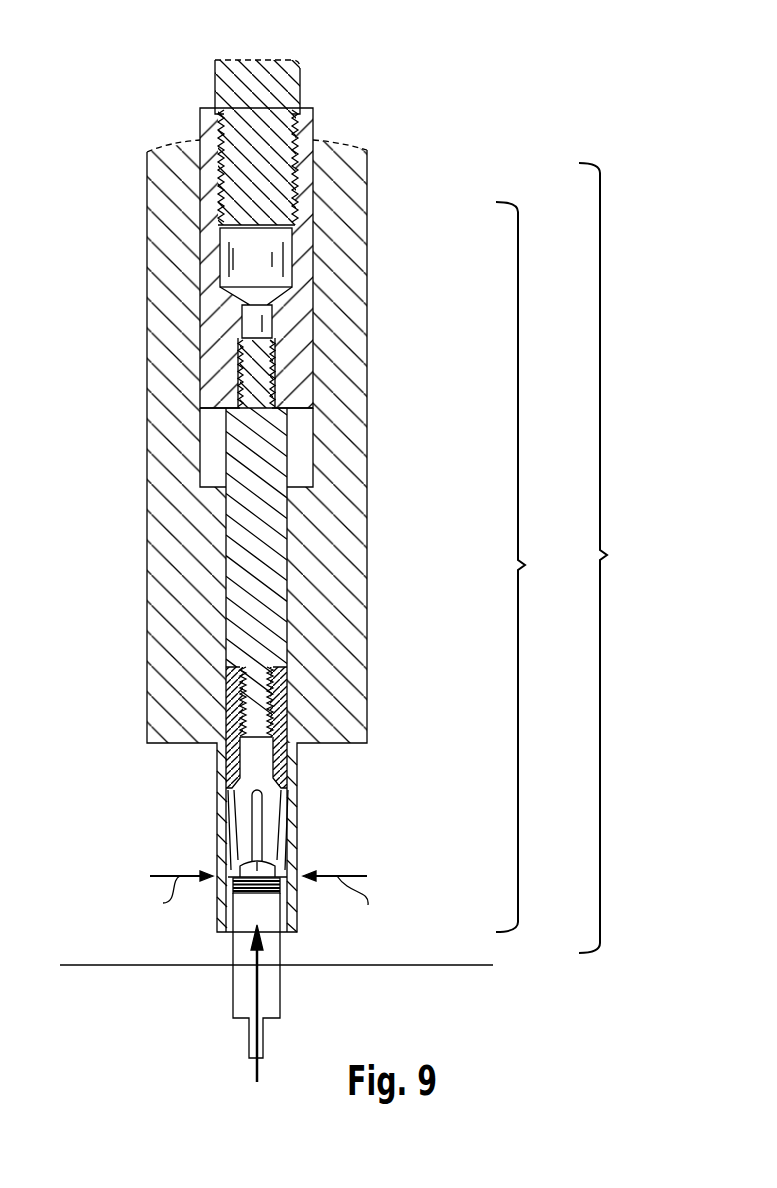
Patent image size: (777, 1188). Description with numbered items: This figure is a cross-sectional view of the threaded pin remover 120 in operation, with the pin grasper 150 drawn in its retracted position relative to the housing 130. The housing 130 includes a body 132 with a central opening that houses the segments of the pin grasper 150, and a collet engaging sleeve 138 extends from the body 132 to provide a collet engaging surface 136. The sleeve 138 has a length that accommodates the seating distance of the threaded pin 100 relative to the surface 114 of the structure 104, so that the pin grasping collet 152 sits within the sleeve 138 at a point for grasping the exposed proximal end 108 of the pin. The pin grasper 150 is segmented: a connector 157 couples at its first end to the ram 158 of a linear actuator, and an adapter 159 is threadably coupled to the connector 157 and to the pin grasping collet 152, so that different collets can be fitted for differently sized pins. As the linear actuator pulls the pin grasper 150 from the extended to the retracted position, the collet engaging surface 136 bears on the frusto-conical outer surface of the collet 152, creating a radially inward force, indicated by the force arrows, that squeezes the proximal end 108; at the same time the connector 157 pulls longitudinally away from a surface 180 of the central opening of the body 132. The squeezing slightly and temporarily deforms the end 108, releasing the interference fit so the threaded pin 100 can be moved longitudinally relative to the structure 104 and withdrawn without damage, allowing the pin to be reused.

The threaded pin 100 is at (270, 1006).
The structure 104 is at (142, 1023).
The proximal end 108 is at (264, 892).
The surface 114 is at (100, 964).
The threaded pin remover 120 is at (620, 558).
The housing 130 is at (147, 252).
The body 132 is at (160, 377).
The collet engaging surface 136 is at (296, 926).
The collet engaging sleeve 138 is at (222, 838).
The pin grasper 150 is at (536, 567).
The pin grasping collet 152 is at (278, 827).
The connector 157 is at (313, 346).
The ram 158 is at (298, 250).
The adapter 159 is at (288, 596).
The surface 180 is at (212, 487).